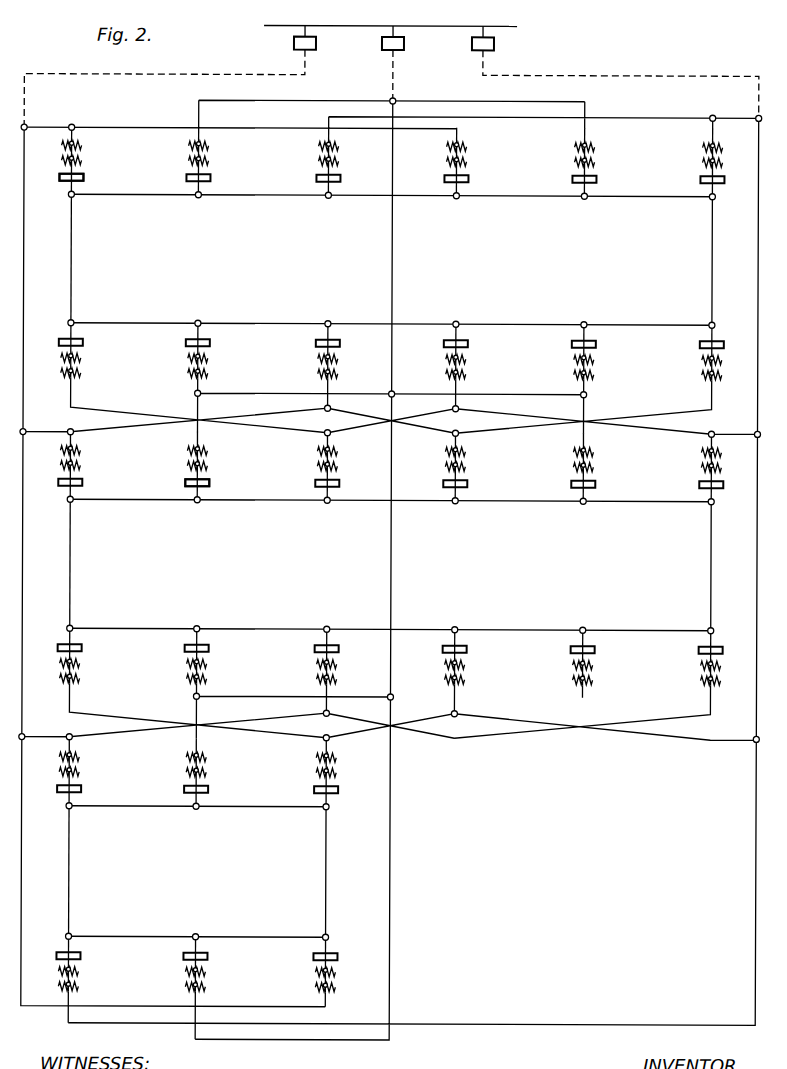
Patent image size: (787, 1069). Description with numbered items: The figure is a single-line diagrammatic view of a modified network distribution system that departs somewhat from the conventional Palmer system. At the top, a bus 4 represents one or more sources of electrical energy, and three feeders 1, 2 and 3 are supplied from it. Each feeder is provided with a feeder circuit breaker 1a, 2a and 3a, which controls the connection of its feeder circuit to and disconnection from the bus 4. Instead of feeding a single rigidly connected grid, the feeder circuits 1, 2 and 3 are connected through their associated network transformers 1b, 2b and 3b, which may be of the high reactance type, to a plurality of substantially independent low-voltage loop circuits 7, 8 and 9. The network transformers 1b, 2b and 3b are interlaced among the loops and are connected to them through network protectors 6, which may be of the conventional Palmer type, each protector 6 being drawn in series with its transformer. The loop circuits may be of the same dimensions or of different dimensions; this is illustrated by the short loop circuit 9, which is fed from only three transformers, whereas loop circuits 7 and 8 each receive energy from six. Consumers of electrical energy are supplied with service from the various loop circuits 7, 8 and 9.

The feeder 1 is at (215, 74).
The feeder 2 is at (389, 68).
The feeder 3 is at (554, 75).
The bus 4 is at (515, 27).
The feeder circuit breaker 1a is at (292, 43).
The feeder circuit breaker 2a is at (380, 43).
The feeder circuit breaker 3a is at (470, 43).
The network transformer 1b is at (121, 169).
The network transformer 2b is at (250, 169).
The network transformer 3b is at (380, 169).
The network protector 6 is at (82, 178).
The loop circuit 7 is at (70, 224).
The loop circuit 8 is at (70, 540).
The loop circuit 9 is at (70, 845).